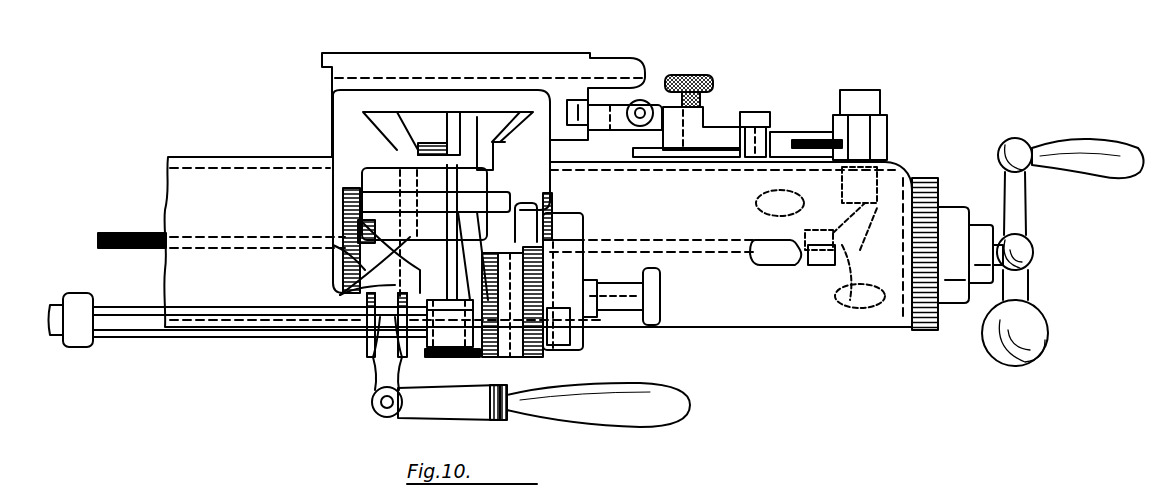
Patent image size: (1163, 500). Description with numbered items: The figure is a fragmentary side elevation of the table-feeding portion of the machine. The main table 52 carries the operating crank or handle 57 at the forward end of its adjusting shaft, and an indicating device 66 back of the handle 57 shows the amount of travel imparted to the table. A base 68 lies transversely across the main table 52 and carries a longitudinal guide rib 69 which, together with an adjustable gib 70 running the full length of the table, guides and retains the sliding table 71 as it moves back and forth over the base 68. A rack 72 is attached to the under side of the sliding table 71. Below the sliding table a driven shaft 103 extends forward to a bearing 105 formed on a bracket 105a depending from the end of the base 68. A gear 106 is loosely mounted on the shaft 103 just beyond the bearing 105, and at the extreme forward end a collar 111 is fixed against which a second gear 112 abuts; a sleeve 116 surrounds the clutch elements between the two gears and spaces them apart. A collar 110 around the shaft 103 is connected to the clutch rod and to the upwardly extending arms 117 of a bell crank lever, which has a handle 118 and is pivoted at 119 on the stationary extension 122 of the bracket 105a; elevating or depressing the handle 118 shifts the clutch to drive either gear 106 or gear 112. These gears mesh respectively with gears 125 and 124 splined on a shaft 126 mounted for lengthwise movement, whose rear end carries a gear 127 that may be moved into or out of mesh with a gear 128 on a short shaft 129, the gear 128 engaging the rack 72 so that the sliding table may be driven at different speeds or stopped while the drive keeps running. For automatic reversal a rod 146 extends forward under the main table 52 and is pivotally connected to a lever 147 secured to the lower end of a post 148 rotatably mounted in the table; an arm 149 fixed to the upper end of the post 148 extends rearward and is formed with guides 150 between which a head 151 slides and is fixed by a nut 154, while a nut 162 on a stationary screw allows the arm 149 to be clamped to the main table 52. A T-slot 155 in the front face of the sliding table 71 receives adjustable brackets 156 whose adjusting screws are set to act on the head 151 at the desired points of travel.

The main table 52 is at (898, 165).
The operating crank or handle 57 is at (1030, 285).
The indicating device 66 is at (927, 298).
The base 68 is at (525, 153).
The longitudinal guide rib 69 is at (388, 128).
The adjustable gib 70 is at (497, 137).
The sliding table 71 is at (355, 100).
The rack 72 is at (392, 140).
The shaft 103 is at (253, 342).
The bearing 105 is at (520, 367).
The bracket 105a is at (345, 247).
The gear 106 is at (525, 357).
The collar 110 is at (367, 358).
The collar 111 is at (543, 353).
The second gear 112 is at (517, 353).
The sleeve 116 is at (575, 410).
The arms 117 is at (377, 380).
The handle 118 is at (490, 423).
The pivot 119 is at (383, 418).
The stationary extension 122 is at (438, 375).
The gear 124 is at (590, 252).
The gear 125 is at (505, 237).
The shaft 126 is at (613, 323).
The gear 127 is at (352, 283).
The gear 128 is at (433, 143).
The short shaft 129 is at (340, 193).
The rod 146 is at (131, 250).
The lever 147 is at (860, 296).
The post 148 is at (780, 203).
The arm 149 is at (790, 132).
The guides 150 is at (790, 78).
The head 151 is at (705, 130).
The nut 154 is at (694, 77).
The T-slot 155 is at (620, 135).
The brackets 156 is at (640, 140).
The nut 162 is at (778, 110).